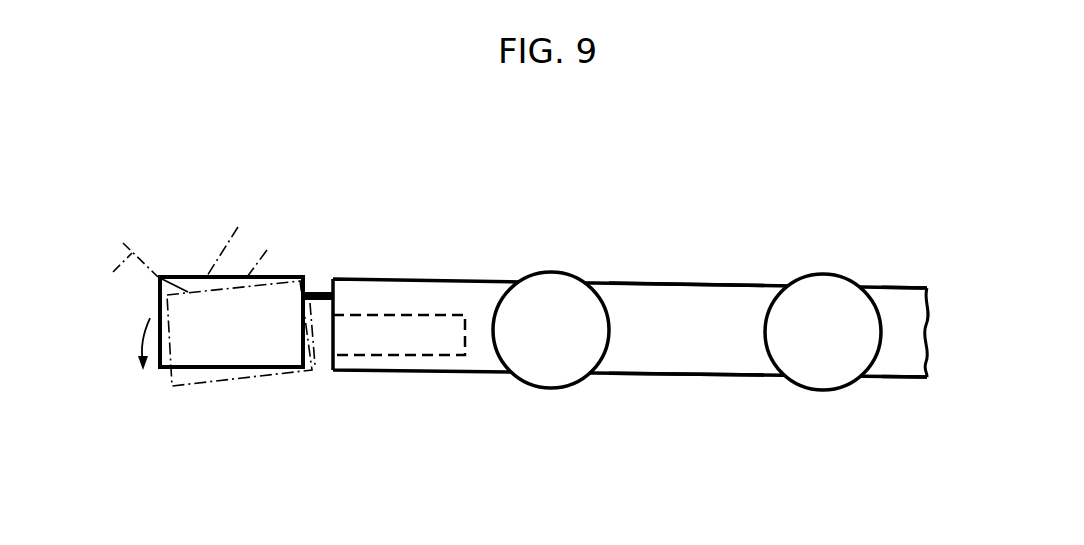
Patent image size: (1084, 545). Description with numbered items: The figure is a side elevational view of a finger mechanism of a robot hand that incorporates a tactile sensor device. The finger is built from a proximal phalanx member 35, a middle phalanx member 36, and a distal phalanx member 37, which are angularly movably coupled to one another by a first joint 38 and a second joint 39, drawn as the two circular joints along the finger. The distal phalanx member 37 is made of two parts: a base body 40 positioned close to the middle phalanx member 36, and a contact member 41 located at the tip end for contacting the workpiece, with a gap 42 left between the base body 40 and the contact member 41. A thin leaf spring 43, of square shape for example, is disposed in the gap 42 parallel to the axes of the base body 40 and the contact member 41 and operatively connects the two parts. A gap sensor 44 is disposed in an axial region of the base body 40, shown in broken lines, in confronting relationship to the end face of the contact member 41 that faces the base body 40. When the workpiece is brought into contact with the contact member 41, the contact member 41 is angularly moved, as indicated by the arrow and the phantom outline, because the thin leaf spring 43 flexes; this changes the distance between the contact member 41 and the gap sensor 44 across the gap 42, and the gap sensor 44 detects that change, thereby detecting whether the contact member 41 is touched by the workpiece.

The proximal phalanx member 35 is at (892, 288).
The middle phalanx member 36 is at (637, 284).
The distal phalanx member 37 is at (392, 400).
The first joint 38 is at (815, 275).
The second joint 39 is at (548, 272).
The base body 40 is at (388, 280).
The contact member 41 is at (247, 277).
The gap 42 is at (322, 345).
The thin leaf spring 43 is at (321, 291).
The gap sensor 44 is at (420, 356).